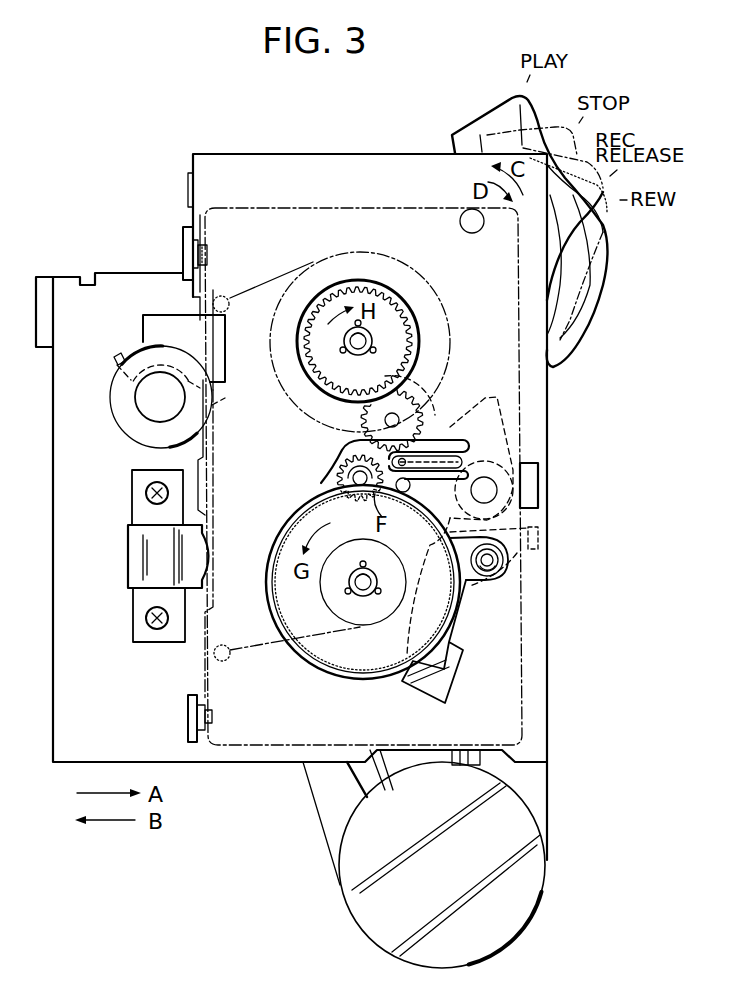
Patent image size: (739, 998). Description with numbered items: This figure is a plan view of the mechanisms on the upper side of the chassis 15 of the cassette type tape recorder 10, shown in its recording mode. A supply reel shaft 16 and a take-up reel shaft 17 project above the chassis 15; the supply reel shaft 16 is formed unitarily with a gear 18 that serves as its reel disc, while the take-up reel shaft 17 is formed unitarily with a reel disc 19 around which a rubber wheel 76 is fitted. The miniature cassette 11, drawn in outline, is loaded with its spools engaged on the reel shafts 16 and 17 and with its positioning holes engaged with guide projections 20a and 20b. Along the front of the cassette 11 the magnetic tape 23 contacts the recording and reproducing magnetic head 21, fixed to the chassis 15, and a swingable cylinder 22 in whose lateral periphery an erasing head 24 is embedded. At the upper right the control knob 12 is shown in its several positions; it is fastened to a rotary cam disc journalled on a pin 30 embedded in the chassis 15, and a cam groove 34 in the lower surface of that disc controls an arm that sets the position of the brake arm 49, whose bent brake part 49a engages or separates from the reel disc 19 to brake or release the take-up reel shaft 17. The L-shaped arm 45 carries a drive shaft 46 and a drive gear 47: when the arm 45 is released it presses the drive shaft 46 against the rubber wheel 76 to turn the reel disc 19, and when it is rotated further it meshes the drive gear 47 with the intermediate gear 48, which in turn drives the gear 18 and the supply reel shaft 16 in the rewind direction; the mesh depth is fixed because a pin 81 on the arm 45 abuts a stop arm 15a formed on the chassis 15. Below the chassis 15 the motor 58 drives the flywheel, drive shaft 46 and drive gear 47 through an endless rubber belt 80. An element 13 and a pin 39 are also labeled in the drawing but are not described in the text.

The tape recorder 10 is at (404, 119).
The miniature cassette 11 is at (287, 210).
The control knob 12 is at (472, 128).
The chassis 13 is at (45, 348).
The chassis 15 is at (320, 154).
The stop arm 15a is at (405, 457).
The supply reel shaft 16 is at (348, 343).
The take-up reel shaft 17 is at (348, 588).
The gear 18 is at (403, 335).
The reel disc 19 is at (352, 664).
The guide projection 20a is at (208, 253).
The guide projection 20b is at (213, 717).
The recording and reproducing magnetic head 21 is at (130, 553).
The cylinder 22 is at (115, 412).
The magnetic tape 23 is at (214, 442).
The erasing head 24 is at (214, 397).
The pin 30 is at (472, 233).
The cam groove 34 is at (497, 490).
The pin 39 is at (483, 574).
The L-shaped arm 45 is at (352, 436).
The drive shaft 46 is at (341, 478).
The drive gear 47 is at (335, 460).
The intermediate gear 48 is at (424, 385).
The brake arm 49 is at (520, 562).
The bent brake part 49a is at (450, 690).
The motor 58 is at (345, 888).
The rubber wheel 76 is at (284, 533).
The endless rubber belt 80 is at (396, 757).
The pin 81 is at (403, 493).